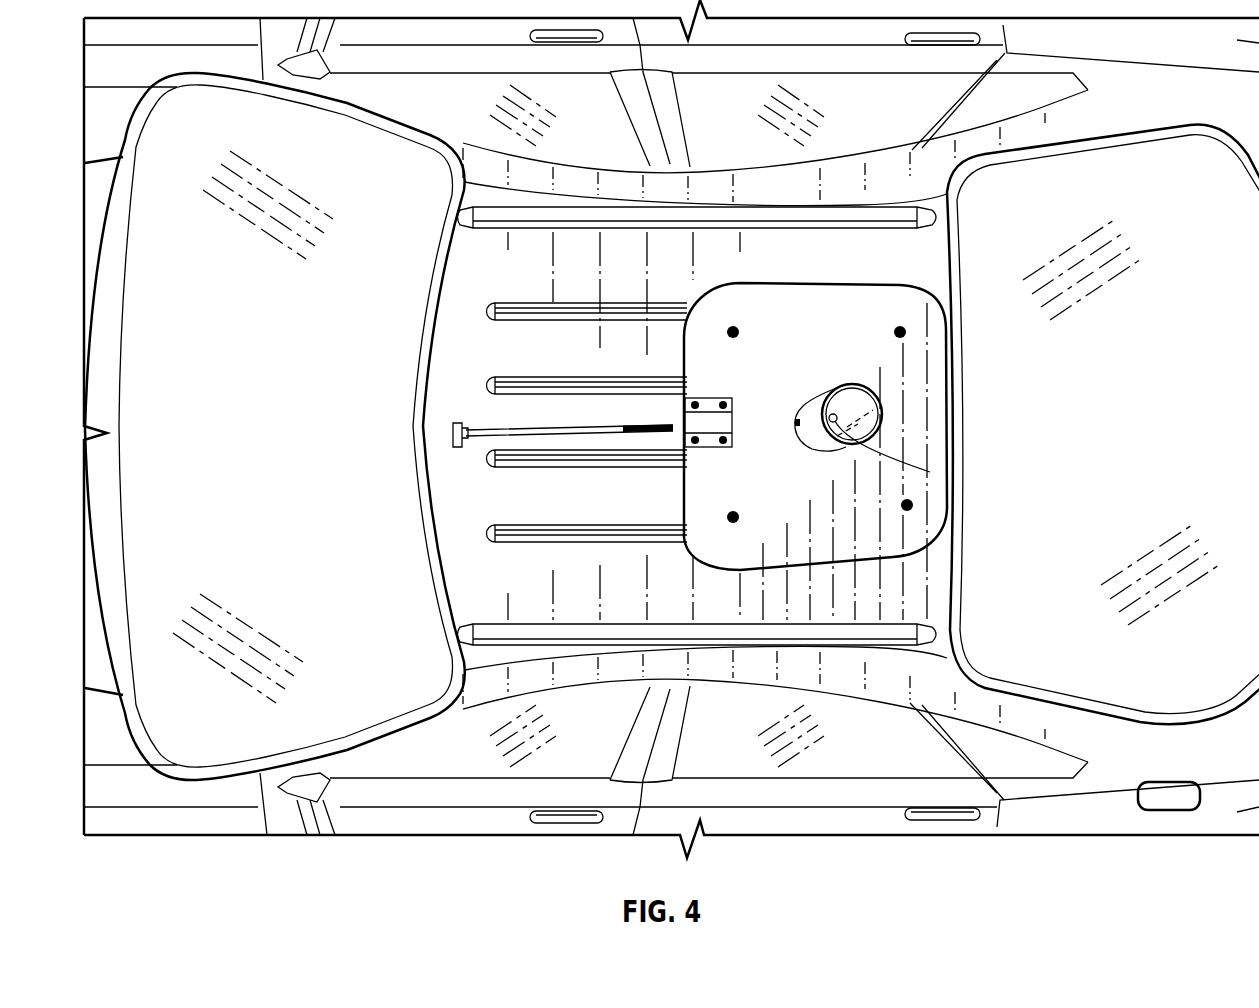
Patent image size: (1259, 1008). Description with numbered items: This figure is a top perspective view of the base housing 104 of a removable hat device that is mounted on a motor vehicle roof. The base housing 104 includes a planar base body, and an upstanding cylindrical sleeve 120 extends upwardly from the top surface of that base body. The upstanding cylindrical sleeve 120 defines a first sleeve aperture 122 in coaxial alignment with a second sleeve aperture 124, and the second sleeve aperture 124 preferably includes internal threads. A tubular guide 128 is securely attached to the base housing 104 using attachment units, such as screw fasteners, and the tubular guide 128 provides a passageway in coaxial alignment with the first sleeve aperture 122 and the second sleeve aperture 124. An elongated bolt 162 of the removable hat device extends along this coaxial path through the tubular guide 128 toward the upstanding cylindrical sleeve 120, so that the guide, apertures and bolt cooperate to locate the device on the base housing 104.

The base housing 104 is at (800, 284).
The upstanding cylindrical sleeve 120 is at (818, 400).
The first sleeve aperture 122 is at (797, 423).
The second sleeve aperture 124 is at (930, 472).
The tubular guide 128 is at (702, 428).
The elongated bolt 162 is at (560, 432).